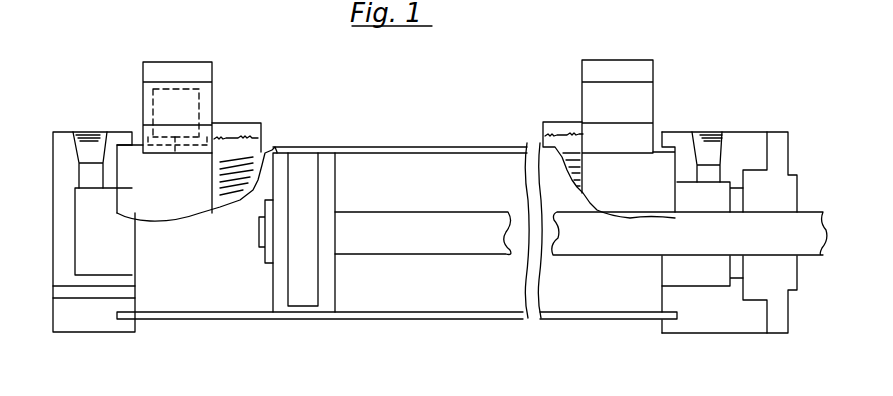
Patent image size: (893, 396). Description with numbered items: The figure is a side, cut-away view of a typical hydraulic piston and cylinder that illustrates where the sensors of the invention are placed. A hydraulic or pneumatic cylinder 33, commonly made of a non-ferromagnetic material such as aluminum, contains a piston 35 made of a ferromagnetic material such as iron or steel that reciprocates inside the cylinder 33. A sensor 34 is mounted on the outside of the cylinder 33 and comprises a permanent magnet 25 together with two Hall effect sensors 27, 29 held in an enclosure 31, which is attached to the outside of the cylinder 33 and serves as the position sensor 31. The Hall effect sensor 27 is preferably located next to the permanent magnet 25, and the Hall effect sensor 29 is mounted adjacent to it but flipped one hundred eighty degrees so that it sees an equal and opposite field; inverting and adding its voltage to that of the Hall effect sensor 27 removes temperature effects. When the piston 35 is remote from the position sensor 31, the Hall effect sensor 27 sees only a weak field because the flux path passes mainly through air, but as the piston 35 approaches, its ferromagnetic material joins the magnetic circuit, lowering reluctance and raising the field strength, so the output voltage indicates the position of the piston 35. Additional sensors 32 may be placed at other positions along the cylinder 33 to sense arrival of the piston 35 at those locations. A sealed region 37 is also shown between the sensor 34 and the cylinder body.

The permanent magnet 25 is at (183, 102).
The Hall effect sensor 27 is at (162, 147).
The Hall effect sensor 29 is at (193, 147).
The enclosure 31 is at (143, 96).
The additional sensor 32 is at (642, 53).
The cylinder 33 is at (203, 320).
The sensor 34 is at (153, 57).
The piston 35 is at (304, 297).
The seal region 37 is at (250, 152).